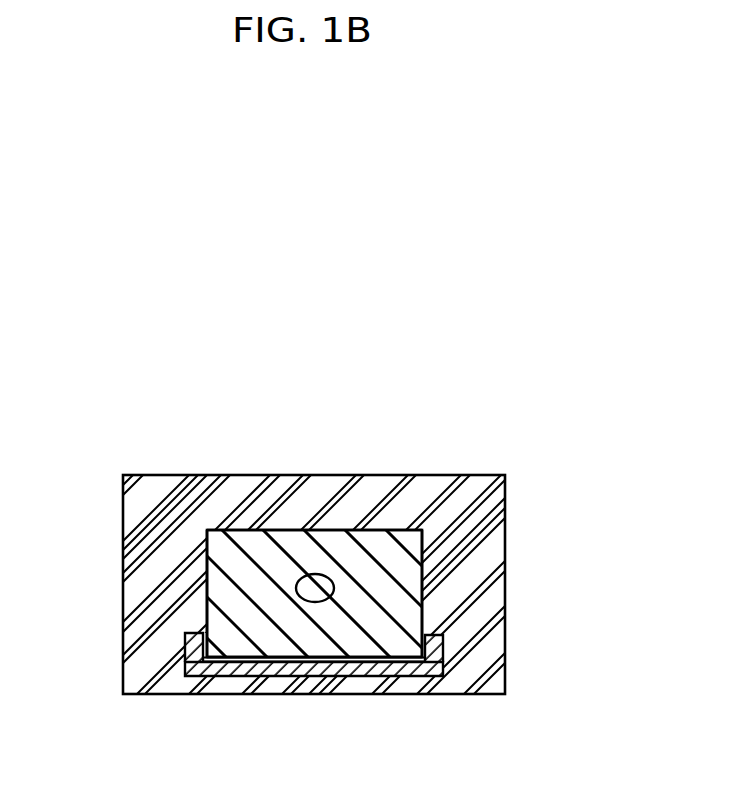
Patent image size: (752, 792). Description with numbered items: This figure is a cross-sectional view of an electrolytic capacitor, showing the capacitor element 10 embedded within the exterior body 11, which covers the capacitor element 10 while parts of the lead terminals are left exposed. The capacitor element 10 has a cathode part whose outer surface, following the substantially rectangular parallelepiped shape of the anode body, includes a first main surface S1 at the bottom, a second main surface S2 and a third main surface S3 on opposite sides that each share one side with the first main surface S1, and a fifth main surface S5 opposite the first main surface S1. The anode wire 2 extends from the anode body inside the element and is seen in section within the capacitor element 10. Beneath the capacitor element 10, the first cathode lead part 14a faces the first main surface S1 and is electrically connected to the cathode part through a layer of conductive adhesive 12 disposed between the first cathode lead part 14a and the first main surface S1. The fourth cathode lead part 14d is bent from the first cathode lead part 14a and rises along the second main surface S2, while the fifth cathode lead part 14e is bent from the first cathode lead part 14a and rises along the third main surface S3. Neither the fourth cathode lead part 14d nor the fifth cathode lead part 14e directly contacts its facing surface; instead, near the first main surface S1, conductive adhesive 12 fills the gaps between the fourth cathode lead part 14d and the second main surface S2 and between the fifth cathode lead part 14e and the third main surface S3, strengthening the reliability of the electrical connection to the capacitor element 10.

The capacitor element 10 is at (341, 545).
The exterior body 11 is at (387, 502).
The anode wire 2 is at (307, 578).
The conductive adhesive 12 is at (248, 694).
The first cathode lead part 14a is at (355, 694).
The fourth cathode lead part 14d is at (445, 662).
The fifth cathode lead part 14e is at (190, 653).
The first main surface S1 is at (269, 654).
The second main surface S2 is at (427, 548).
The third main surface S3 is at (204, 557).
The fifth main surface S5 is at (416, 520).